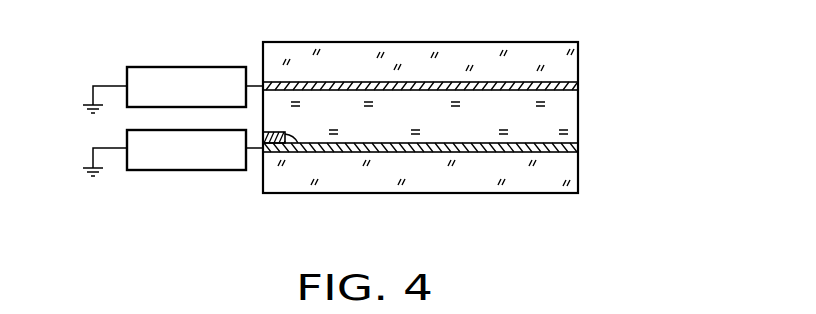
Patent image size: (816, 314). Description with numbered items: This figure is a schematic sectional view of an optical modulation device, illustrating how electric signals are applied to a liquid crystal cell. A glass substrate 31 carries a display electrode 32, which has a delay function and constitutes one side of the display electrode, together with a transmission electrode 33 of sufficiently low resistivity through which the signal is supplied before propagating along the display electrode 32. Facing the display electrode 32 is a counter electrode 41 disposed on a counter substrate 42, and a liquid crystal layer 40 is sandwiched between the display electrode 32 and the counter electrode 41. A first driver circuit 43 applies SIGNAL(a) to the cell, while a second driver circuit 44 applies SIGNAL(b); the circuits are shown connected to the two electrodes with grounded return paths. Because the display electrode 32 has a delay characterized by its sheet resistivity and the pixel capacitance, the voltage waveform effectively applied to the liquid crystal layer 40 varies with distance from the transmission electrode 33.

The glass substrate 31 is at (567, 170).
The display electrode 32 is at (574, 146).
The transmission electrode 33 is at (286, 136).
The liquid crystal layer 40 is at (567, 117).
The counter electrode 41 is at (574, 86).
The counter substrate 42 is at (567, 69).
The driver circuit 43 is at (181, 67).
The driver circuit 44 is at (186, 170).